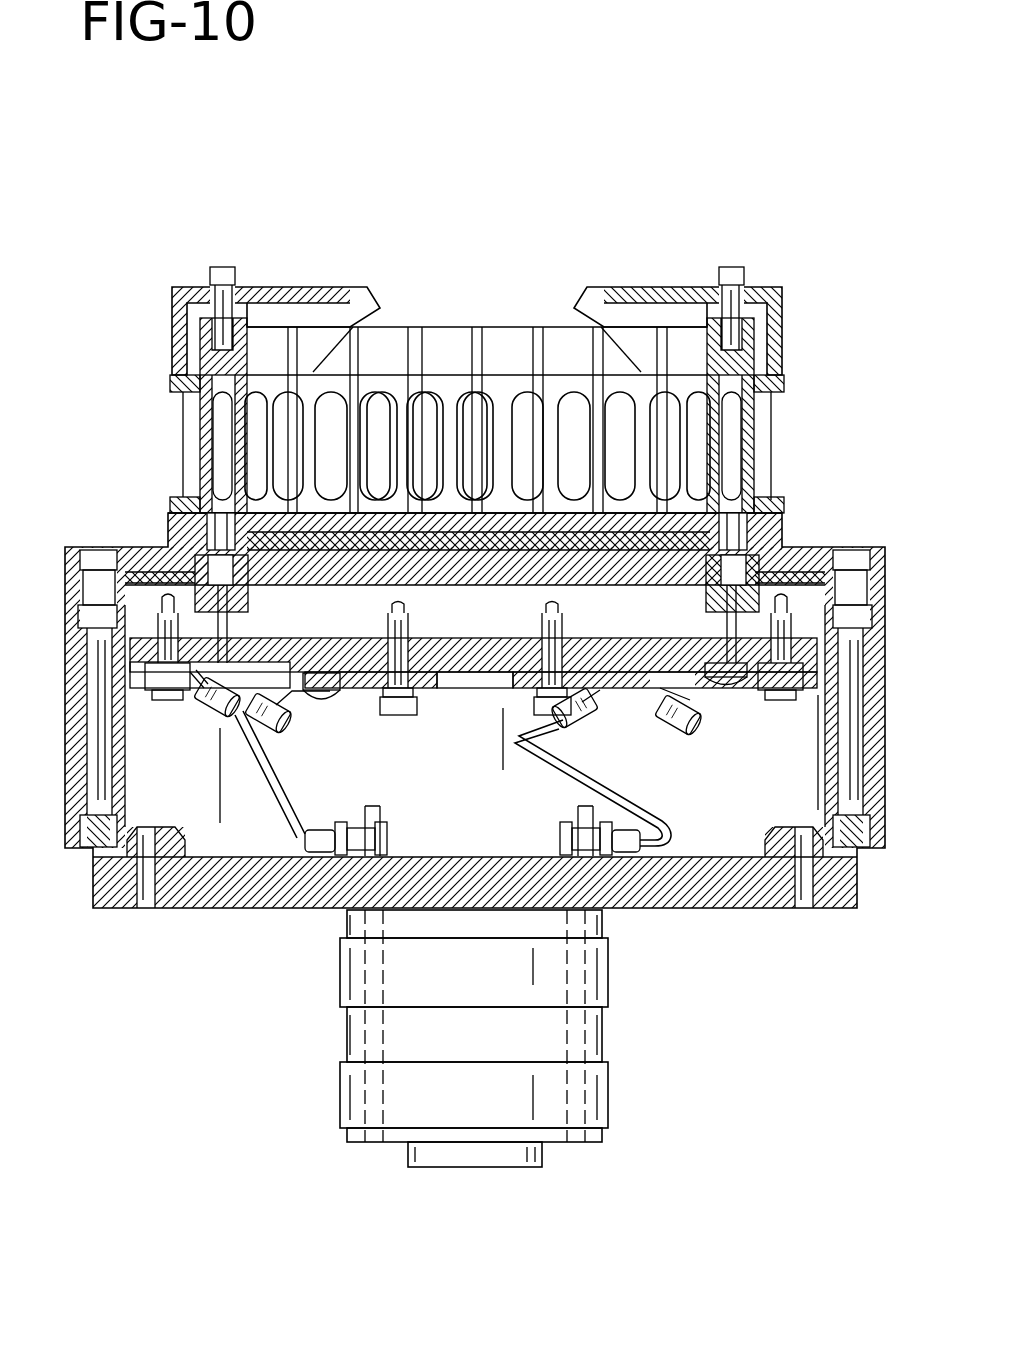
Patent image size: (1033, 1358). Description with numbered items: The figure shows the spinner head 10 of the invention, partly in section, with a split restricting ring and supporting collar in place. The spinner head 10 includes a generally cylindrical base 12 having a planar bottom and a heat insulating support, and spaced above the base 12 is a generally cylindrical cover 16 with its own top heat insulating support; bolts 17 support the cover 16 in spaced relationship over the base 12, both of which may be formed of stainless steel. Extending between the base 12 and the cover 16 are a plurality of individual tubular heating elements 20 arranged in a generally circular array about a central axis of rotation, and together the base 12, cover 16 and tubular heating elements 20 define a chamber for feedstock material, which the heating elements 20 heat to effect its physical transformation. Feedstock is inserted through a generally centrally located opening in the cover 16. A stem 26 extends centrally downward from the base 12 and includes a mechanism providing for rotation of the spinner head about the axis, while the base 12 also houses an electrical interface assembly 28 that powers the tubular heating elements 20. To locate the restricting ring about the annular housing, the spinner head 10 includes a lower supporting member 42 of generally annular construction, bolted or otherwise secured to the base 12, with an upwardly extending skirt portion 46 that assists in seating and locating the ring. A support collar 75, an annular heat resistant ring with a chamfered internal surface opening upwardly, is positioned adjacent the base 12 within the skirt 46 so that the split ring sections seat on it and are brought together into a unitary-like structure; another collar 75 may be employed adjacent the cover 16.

The spinner head 10 is at (352, 229).
The base 12 is at (883, 790).
The cover 16 is at (770, 292).
The bolts 17 is at (731, 266).
The tubular heating elements 20 is at (773, 500).
The stem 26 is at (598, 1025).
The electrical interface assembly 28 is at (625, 835).
The lower supporting member 42 is at (780, 530).
The skirt portion 46 is at (172, 520).
The support collar 75 is at (185, 498).